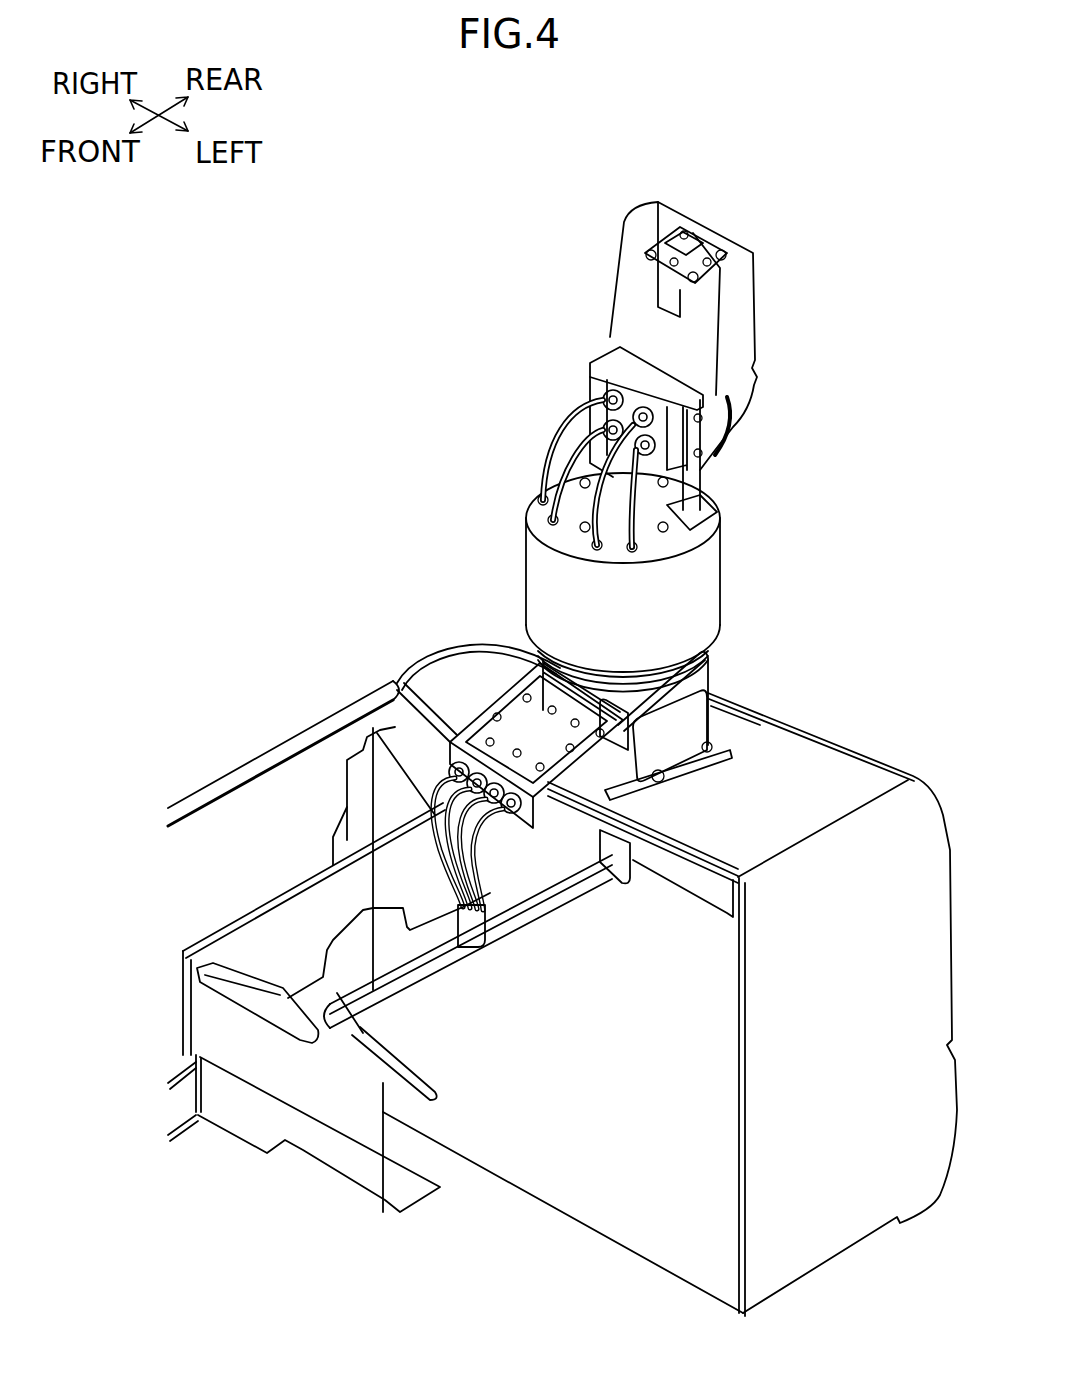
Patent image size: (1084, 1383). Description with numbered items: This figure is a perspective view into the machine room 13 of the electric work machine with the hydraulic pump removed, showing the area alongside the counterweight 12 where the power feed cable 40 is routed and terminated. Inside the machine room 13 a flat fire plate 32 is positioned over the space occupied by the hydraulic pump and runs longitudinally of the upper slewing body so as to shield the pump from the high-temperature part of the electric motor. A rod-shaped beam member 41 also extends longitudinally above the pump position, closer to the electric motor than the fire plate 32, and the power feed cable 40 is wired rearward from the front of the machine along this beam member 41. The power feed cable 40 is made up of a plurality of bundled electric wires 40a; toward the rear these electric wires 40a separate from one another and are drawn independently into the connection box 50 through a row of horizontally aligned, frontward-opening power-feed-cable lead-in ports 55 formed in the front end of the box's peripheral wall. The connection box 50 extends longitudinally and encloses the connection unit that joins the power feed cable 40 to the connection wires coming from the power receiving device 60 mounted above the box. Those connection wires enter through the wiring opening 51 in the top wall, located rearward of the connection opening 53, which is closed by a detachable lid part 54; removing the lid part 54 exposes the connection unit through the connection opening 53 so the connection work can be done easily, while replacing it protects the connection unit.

The counterweight 12 is at (797, 750).
The machine room 13 is at (175, 765).
The fire plate 32 is at (284, 887).
The power feed cable 40 is at (329, 897).
The electric wires 40a is at (390, 967).
The beam member 41 is at (473, 970).
The connection box 50 is at (743, 705).
The wiring opening 51 is at (712, 682).
The connection opening 53 is at (491, 691).
The lid part 54 is at (487, 723).
The power-feed-cable lead-in ports 55 is at (505, 778).
The power receiving device 60 is at (717, 587).